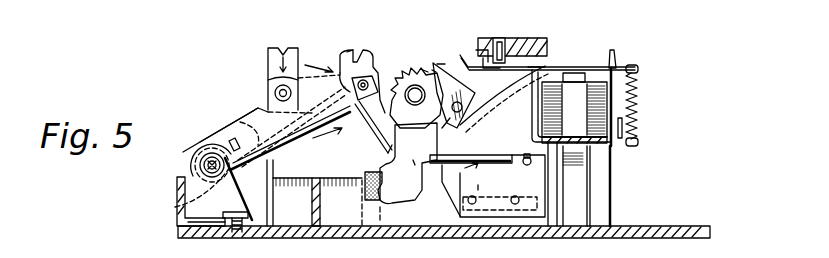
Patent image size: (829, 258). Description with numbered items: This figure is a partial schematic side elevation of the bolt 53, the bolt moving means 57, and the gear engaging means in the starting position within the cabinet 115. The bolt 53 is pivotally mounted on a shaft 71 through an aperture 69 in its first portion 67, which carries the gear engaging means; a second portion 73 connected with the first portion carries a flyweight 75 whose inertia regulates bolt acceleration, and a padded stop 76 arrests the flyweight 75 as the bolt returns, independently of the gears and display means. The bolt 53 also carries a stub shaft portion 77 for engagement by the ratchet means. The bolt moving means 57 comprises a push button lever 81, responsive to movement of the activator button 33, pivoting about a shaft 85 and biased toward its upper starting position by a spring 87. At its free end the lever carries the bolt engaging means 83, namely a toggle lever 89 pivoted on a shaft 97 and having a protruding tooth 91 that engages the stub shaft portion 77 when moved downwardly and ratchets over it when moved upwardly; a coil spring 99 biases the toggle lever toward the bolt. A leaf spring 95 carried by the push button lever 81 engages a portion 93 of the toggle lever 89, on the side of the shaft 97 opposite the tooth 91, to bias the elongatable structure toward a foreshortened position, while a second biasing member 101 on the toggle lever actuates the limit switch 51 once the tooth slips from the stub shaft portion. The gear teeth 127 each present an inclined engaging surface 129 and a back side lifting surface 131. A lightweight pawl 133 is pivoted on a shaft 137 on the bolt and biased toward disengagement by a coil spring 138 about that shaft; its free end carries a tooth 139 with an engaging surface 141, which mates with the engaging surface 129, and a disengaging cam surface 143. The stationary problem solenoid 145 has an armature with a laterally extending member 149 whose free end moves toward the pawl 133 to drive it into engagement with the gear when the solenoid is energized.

The activator button 33 is at (270, 62).
The portion of the toggle lever 93 is at (347, 52).
The engaging surface 129 is at (393, 65).
The peripherally disposed teeth 127 is at (423, 70).
The back side surface 131 is at (432, 70).
The disengaging cam surface 143 is at (436, 68).
The tooth 139 is at (437, 64).
The engaging surface 141 is at (499, 45).
The pawl 133 is at (470, 88).
The coil spring 138 is at (465, 92).
The shaft 137 is at (550, 67).
The coil spring 99 is at (268, 78).
The bolt moving means 57 is at (331, 63).
The shaft 97 is at (373, 80).
The laterally extending member 149 is at (592, 67).
The push button lever 81 is at (245, 126).
The tooth 91 is at (270, 95).
The leaf spring 95 is at (240, 124).
The first portion 67 is at (455, 120).
The bolt 53 is at (530, 147).
The shaft 85 is at (204, 164).
The bolt engaging means 83 is at (326, 164).
The toggle lever 89 is at (380, 112).
The aperture 69 is at (415, 105).
The shaft 71 is at (432, 157).
The problem solenoid 145 is at (583, 122).
The second biasing member 101 is at (381, 143).
The stub shaft portion 77 is at (420, 169).
The limit switch 51 is at (497, 180).
The spring 87 is at (205, 206).
The cabinet 115 is at (690, 226).
The padded stop 76 is at (383, 188).
The second portion 73 is at (413, 160).
The flyweight 75 is at (478, 185).